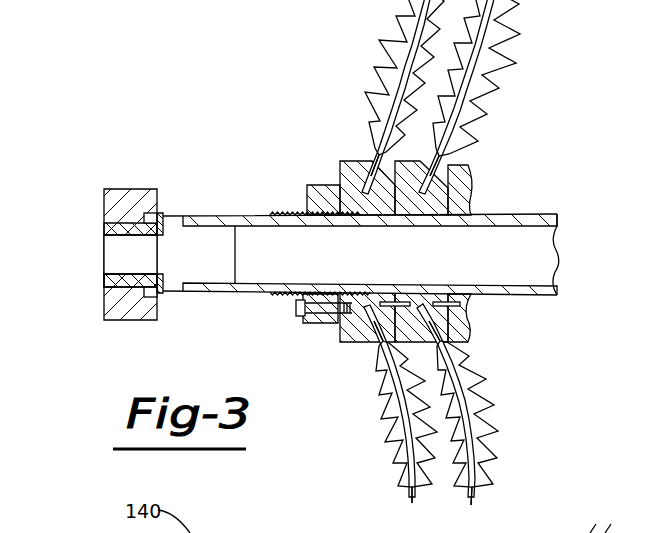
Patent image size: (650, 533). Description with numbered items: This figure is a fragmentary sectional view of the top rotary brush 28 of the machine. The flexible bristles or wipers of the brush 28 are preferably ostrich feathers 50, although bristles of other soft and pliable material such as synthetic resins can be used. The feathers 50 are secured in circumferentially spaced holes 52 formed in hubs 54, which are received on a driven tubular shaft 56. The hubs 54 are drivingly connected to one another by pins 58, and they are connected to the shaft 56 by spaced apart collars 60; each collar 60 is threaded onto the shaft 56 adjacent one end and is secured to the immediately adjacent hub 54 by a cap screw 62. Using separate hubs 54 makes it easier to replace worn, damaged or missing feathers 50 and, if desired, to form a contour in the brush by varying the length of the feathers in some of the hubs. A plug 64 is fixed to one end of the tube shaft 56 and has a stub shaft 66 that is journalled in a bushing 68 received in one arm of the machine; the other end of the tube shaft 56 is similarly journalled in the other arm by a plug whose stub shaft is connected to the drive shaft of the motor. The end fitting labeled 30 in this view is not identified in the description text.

The brush 28 is at (527, 68).
The end cap 30 is at (113, 190).
The ostrich feathers 50 is at (413, 47).
The holes 52 is at (358, 163).
The hubs 54 is at (340, 172).
The tubular shaft 56 is at (549, 297).
The pins 58 is at (468, 308).
The collars 60 is at (307, 200).
The cap screw 62 is at (295, 303).
The plug 64 is at (172, 212).
The stub shaft 66 is at (115, 245).
The bushing 68 is at (108, 278).